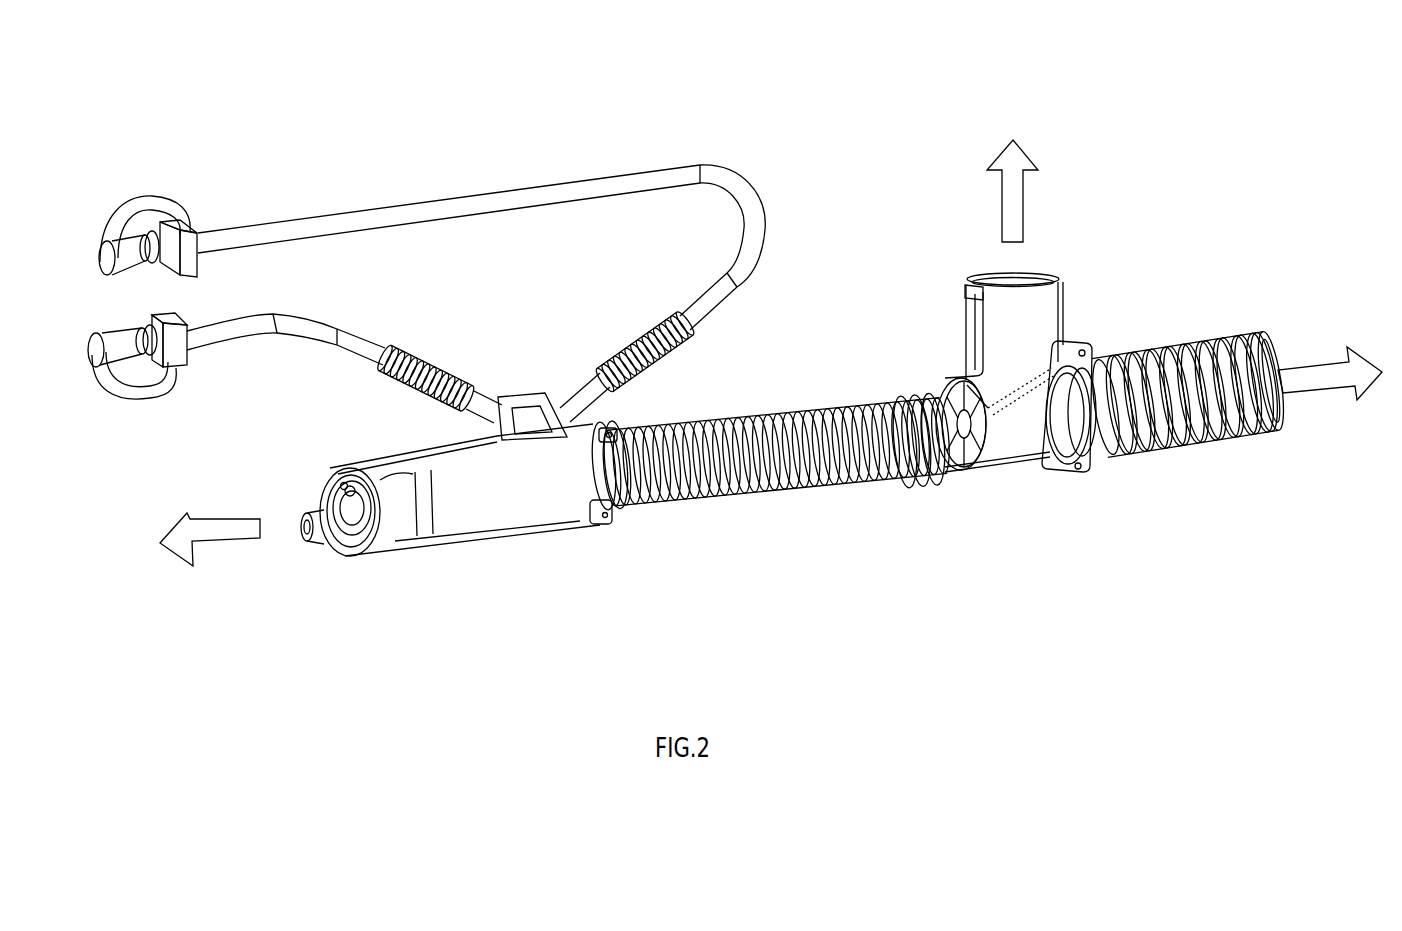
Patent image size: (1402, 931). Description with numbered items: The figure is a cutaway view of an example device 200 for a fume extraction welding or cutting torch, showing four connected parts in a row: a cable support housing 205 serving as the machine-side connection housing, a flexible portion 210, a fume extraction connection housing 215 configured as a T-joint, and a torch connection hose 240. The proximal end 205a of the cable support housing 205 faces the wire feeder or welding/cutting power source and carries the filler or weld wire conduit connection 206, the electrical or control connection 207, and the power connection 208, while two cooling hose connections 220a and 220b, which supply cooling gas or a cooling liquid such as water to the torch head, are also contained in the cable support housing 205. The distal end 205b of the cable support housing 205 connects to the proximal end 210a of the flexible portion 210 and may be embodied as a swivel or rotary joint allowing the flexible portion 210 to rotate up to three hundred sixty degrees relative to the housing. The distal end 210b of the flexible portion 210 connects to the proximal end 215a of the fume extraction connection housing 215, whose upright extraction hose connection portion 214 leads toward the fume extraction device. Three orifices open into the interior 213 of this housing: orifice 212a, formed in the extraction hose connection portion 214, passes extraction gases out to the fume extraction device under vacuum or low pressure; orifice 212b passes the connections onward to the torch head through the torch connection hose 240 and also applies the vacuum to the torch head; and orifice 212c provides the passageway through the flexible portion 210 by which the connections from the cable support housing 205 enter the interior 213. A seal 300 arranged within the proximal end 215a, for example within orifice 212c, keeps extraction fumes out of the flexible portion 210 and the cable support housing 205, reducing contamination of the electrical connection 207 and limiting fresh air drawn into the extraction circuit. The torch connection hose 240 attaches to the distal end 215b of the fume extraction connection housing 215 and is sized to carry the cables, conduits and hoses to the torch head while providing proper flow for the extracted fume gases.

The device 200 is at (214, 87).
The cable support housing 205 is at (680, 565).
The proximal end of cable support housing 205a is at (330, 477).
The distal end of cable support housing 205b is at (622, 420).
The filler or weld wire conduit connection 206 is at (358, 498).
The electrical or control connection 207 is at (323, 495).
The power connection 208 is at (304, 540).
The flexible portion 210 is at (952, 524).
The proximal end of flexible portion 210a is at (717, 500).
The distal end of flexible portion 210b is at (897, 477).
The orifice 212a is at (1030, 297).
The orifice 212b is at (1067, 430).
The orifice 212c is at (943, 418).
The interior 213 is at (1030, 400).
The extraction hose connection portion 214 is at (967, 292).
The fume extraction connection housing 215 is at (1113, 502).
The proximal end of fume extraction connection housing 215a is at (923, 380).
The distal end of fume extraction connection housing 215b is at (1087, 345).
The cooling hose connection 220a is at (430, 372).
The cooling hose connection 220b is at (624, 352).
The torch connection hose 240 is at (1213, 440).
The seal 300 is at (940, 388).